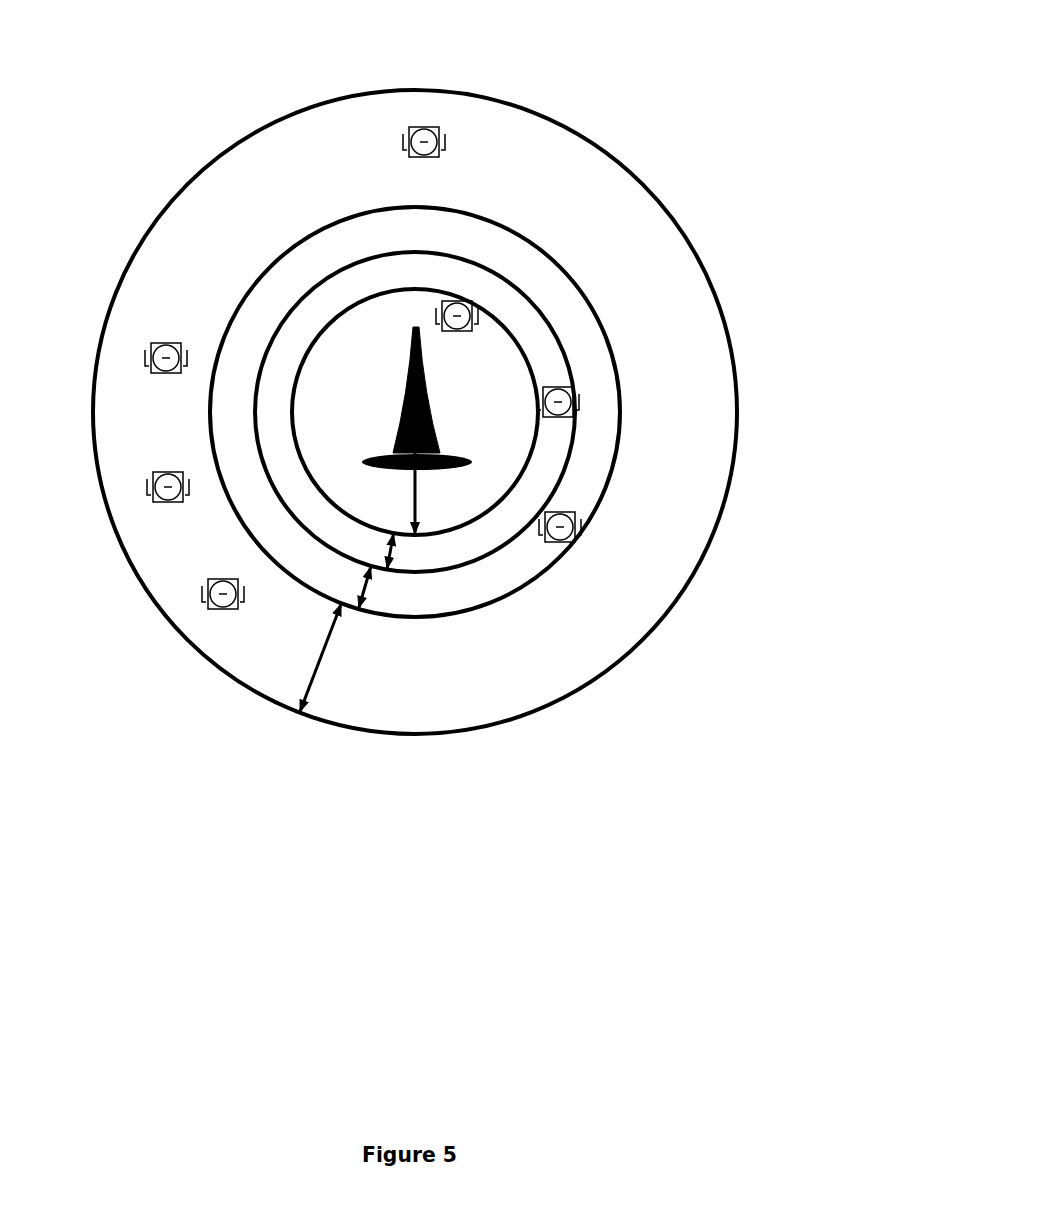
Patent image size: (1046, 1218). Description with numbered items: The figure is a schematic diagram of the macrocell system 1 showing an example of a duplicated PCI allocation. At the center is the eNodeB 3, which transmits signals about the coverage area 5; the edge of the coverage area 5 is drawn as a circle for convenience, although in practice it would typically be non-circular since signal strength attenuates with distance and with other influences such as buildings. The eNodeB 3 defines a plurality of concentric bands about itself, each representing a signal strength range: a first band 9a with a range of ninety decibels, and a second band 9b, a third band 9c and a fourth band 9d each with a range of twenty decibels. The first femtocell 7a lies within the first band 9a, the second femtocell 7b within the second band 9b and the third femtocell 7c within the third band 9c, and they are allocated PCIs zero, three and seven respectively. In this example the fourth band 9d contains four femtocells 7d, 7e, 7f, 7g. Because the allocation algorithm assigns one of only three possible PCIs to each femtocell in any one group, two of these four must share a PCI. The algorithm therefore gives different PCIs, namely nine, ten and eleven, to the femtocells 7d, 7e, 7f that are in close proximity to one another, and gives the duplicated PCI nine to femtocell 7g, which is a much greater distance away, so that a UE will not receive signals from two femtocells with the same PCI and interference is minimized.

The macrocell system 1 is at (613, 45).
The eNodeB 3 is at (408, 369).
The coverage area 5 is at (623, 163).
The first femtocell 7a is at (464, 306).
The second femtocell 7b is at (562, 388).
The third femtocell 7c is at (576, 540).
The fourth femtocell 7d is at (202, 594).
The fifth femtocell 7e is at (147, 490).
The sixth femtocell 7f is at (145, 360).
The femtocell 7g is at (425, 127).
The first band 9a is at (423, 523).
The second band 9b is at (393, 557).
The third band 9c is at (372, 587).
The fourth band 9d is at (323, 660).